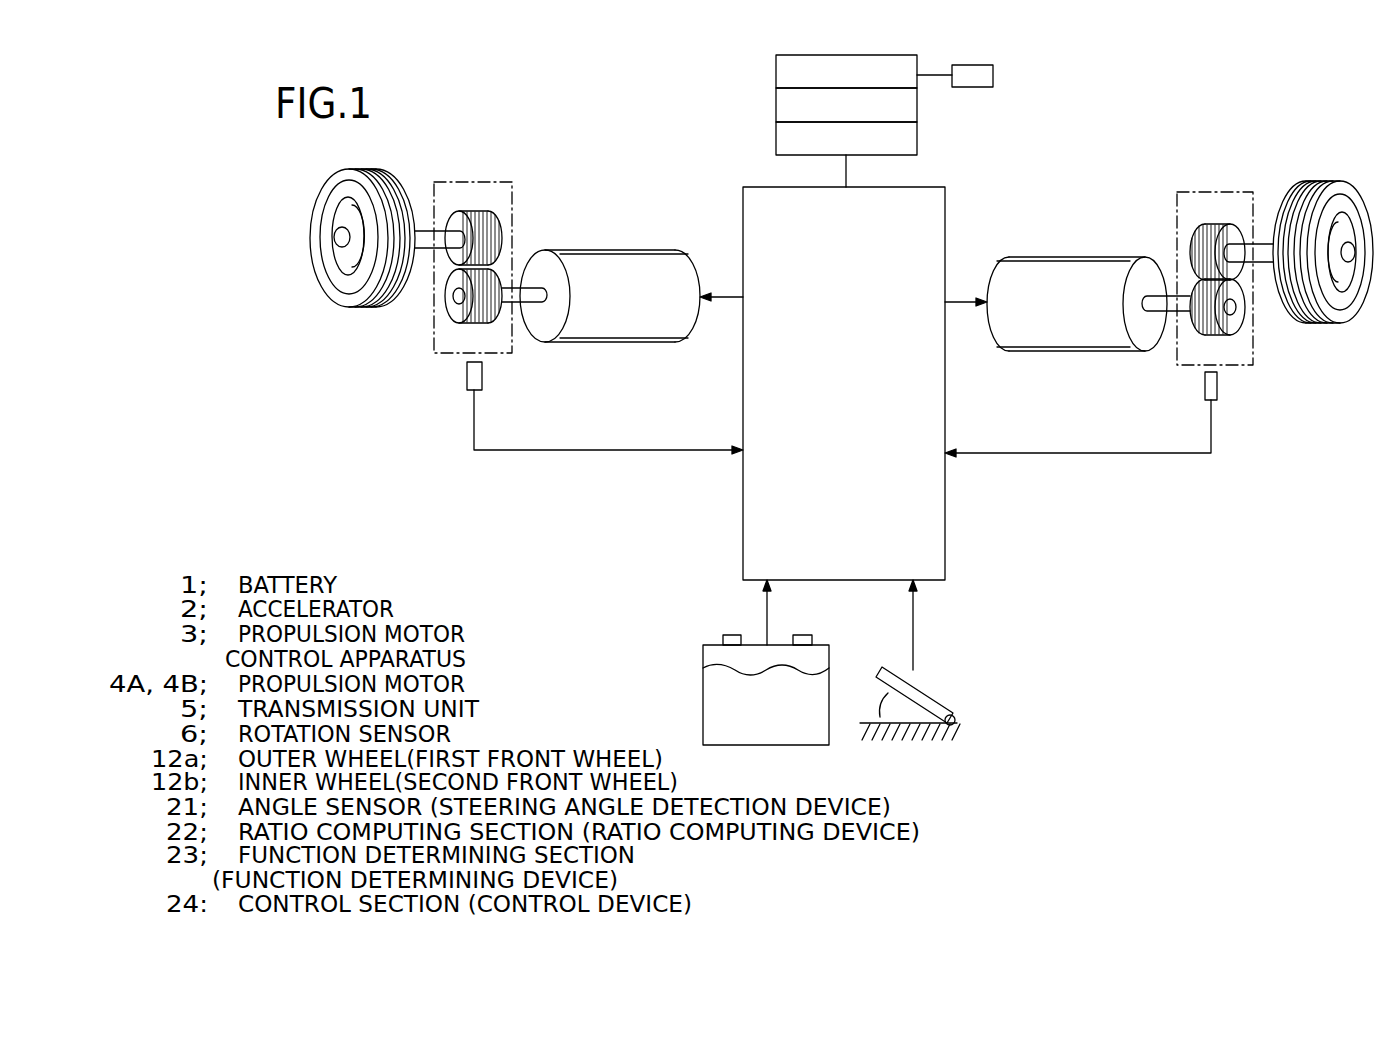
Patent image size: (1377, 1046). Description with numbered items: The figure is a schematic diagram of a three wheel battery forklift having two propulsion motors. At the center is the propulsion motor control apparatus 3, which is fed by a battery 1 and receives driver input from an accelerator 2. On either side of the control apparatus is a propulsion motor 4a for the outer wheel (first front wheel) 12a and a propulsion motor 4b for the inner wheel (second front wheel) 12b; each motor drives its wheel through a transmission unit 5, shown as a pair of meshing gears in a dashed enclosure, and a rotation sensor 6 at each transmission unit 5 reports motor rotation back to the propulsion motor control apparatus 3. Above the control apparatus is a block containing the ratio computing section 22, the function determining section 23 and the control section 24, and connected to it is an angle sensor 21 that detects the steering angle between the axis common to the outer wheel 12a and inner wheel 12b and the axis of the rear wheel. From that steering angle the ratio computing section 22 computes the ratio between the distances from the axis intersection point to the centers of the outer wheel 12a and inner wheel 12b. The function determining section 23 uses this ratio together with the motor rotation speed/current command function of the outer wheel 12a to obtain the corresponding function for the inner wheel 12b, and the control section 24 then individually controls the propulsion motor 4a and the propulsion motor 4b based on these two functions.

The battery 1 is at (703, 725).
The accelerator 2 is at (920, 690).
The propulsion motor control apparatus 3 is at (945, 237).
The propulsion motor 4a is at (1042, 257).
The propulsion motor 4b is at (568, 251).
The transmission unit 5 is at (452, 182).
The rotation sensor 6 is at (483, 373).
The outer wheel (first front wheel) 12a is at (1326, 323).
The inner wheel (second front wheel) 12b is at (354, 308).
The angle sensor (steering angle detection device) 21 is at (993, 77).
The ratio computing section (ratio computing device) 22 is at (787, 72).
The function determining section (function determining device) 23 is at (782, 109).
The control section (control device) 24 is at (786, 138).